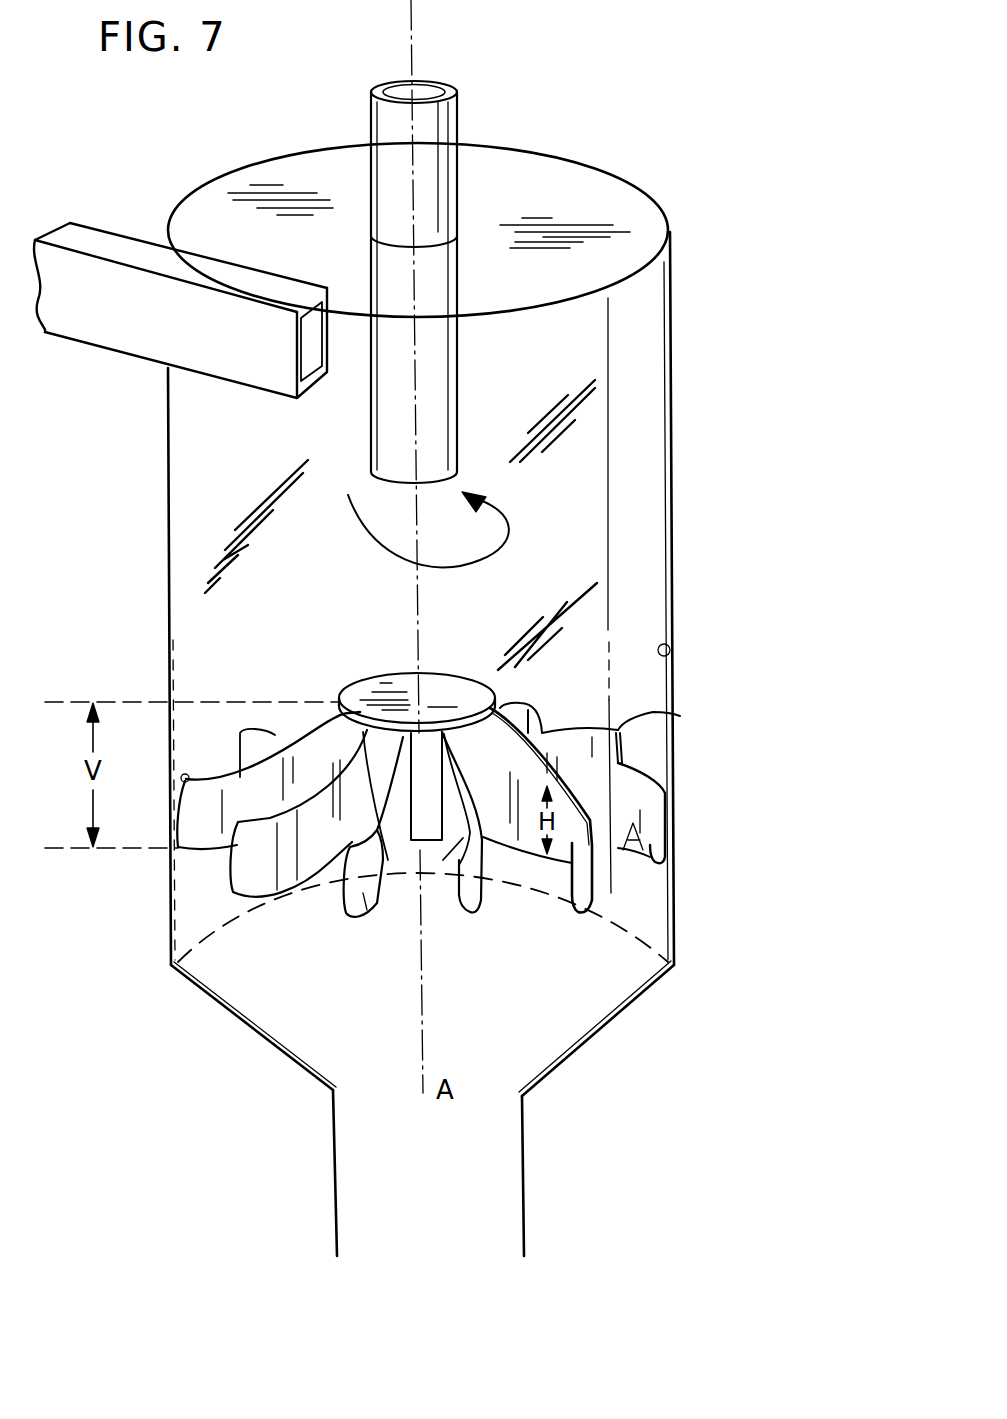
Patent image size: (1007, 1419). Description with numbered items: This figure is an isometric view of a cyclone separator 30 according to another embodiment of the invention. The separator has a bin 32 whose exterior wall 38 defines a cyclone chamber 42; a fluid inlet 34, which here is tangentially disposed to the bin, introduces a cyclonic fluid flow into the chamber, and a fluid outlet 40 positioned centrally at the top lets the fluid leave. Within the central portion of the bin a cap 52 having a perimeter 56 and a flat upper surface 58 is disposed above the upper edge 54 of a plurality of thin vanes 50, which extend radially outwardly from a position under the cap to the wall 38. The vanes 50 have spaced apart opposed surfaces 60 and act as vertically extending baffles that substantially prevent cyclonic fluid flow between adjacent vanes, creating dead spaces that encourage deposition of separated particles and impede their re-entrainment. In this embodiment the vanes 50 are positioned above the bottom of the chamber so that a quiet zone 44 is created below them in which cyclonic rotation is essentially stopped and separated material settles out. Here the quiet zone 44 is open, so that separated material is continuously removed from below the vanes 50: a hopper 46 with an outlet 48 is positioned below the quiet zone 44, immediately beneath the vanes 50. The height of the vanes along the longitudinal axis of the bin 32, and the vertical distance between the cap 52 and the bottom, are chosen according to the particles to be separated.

The cyclone separator 30 is at (724, 331).
The bin 32 is at (681, 497).
The fluid inlet 34 is at (88, 347).
The exterior wall 38 is at (670, 655).
The fluid outlet 40 is at (457, 121).
The cyclone chamber 42 is at (645, 422).
The quiet zone 44 is at (688, 962).
The hopper 46 is at (589, 1039).
The outlet 48 is at (461, 1212).
The vanes 50 is at (617, 730).
The cap 52 is at (362, 692).
The upper edge 54 is at (615, 763).
The perimeter 56 is at (337, 712).
The upper surface 58 is at (442, 695).
The opposed surfaces 60 is at (349, 917).